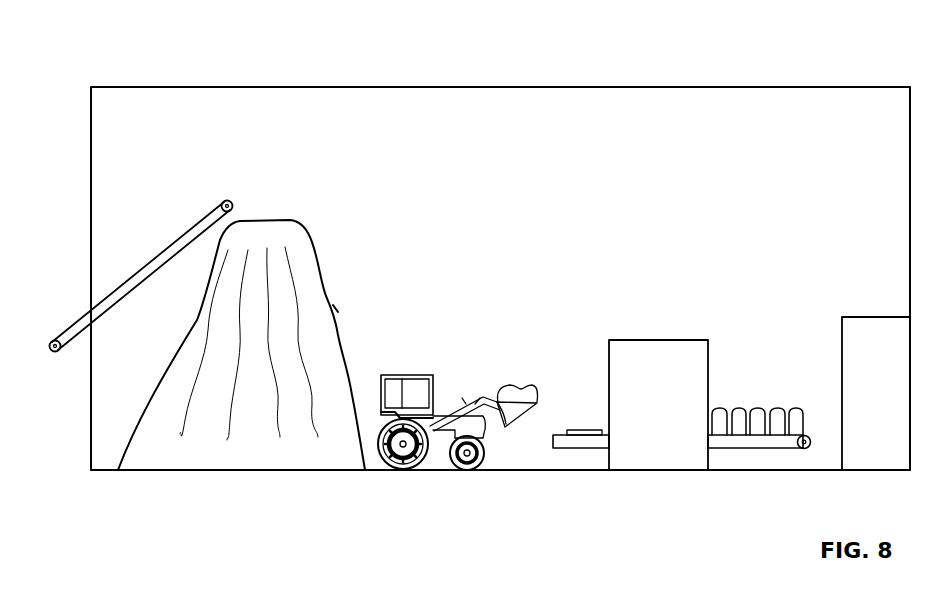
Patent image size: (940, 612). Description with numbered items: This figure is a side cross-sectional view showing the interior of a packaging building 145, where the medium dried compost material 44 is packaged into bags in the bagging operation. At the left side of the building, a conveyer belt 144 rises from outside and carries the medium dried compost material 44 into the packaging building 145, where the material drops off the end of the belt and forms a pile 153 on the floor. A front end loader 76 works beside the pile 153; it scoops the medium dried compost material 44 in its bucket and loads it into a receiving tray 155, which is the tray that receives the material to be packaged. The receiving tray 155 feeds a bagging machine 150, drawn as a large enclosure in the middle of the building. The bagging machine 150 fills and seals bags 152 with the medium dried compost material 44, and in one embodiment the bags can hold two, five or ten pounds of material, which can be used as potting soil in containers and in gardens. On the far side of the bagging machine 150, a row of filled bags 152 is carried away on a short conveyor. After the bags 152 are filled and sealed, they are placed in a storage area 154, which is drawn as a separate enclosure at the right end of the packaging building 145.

The packaging building 145 is at (425, 87).
The conveyer belt 144 is at (155, 255).
The medium dried compost material 44 is at (317, 237).
The pile 153 is at (333, 305).
The front end loader 76 is at (405, 375).
The receiving tray 155 is at (583, 430).
The bagging machine 150 is at (658, 340).
The bags 152 is at (777, 407).
The storage area 154 is at (897, 400).